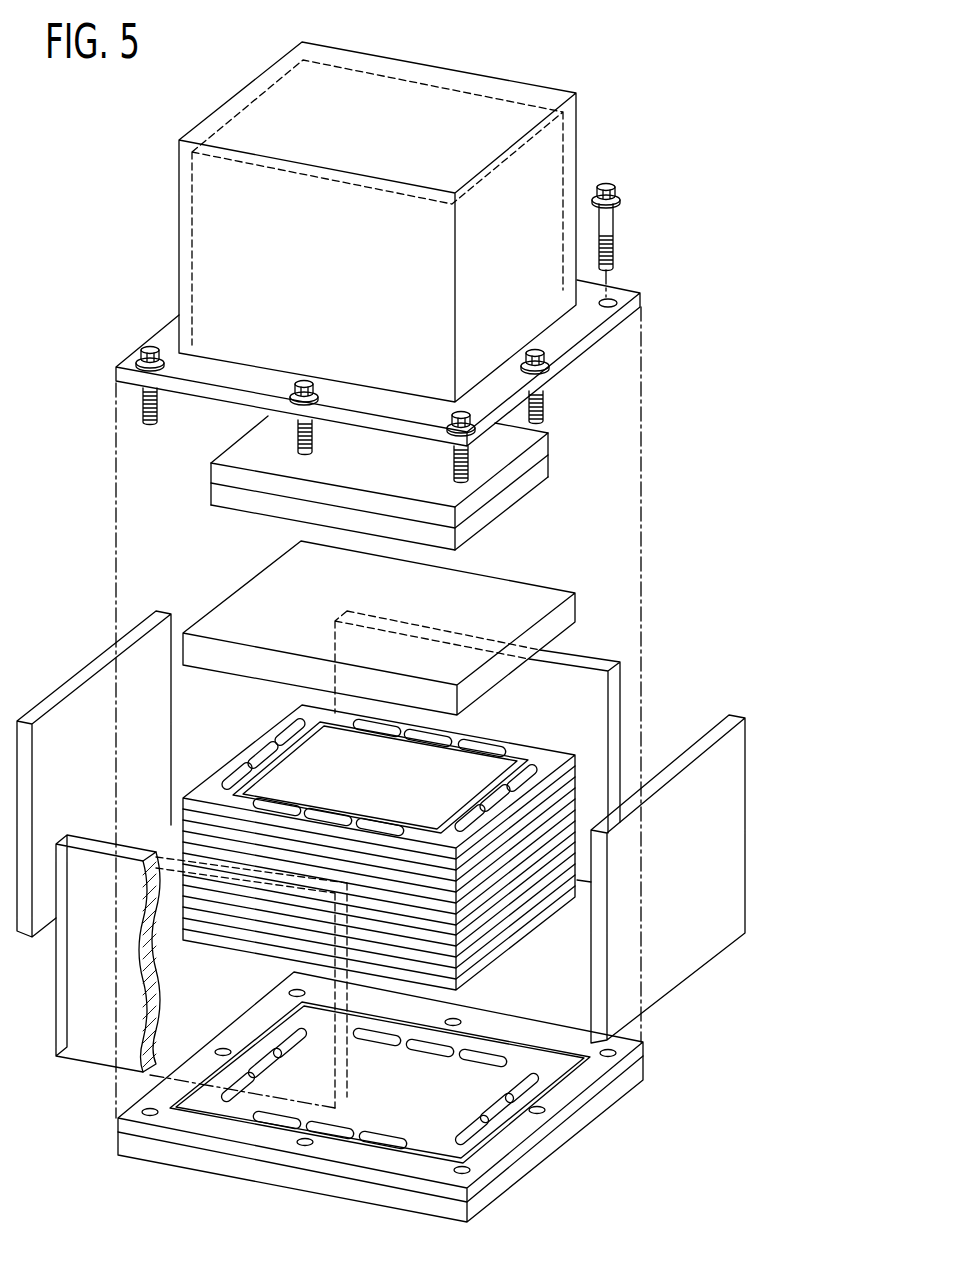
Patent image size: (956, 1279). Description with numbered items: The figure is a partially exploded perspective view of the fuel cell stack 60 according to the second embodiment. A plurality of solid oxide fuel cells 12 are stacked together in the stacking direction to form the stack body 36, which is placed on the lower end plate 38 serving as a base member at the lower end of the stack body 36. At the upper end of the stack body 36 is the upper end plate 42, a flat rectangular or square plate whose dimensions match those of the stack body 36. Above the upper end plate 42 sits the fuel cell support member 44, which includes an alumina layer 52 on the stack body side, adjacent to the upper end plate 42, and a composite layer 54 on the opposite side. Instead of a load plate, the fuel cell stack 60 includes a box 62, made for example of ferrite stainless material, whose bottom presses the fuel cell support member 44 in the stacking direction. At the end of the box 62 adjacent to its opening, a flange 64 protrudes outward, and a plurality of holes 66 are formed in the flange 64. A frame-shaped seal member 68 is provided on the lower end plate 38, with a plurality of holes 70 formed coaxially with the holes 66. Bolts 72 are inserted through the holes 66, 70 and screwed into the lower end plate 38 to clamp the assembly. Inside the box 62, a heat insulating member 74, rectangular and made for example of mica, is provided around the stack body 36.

The solid oxide fuel cell 12 is at (515, 895).
The stack body 36 is at (550, 745).
The lower end plate 38 is at (530, 1176).
The upper end plate 42 is at (527, 597).
The fuel cell support member 44 is at (474, 483).
The alumina layer 52 is at (545, 473).
The composite layer 54 is at (545, 451).
The fuel cell stack 60 is at (532, 43).
The box 62 is at (578, 94).
The flange 64 is at (402, 350).
The hole 66 is at (613, 299).
The seal member 68 is at (420, 1096).
The hole 70 is at (618, 1053).
The bolt 72 is at (614, 188).
The heat insulating member 74 is at (598, 652).